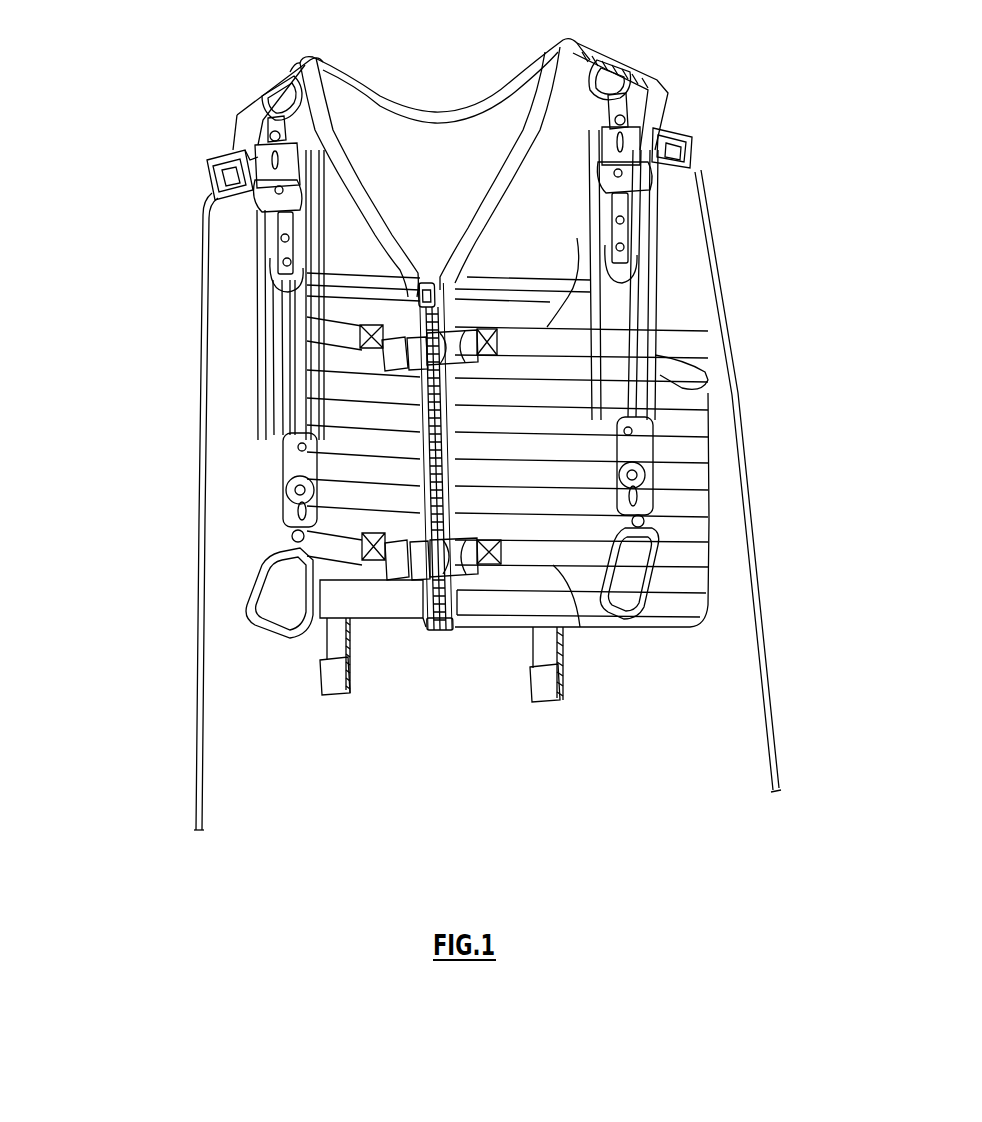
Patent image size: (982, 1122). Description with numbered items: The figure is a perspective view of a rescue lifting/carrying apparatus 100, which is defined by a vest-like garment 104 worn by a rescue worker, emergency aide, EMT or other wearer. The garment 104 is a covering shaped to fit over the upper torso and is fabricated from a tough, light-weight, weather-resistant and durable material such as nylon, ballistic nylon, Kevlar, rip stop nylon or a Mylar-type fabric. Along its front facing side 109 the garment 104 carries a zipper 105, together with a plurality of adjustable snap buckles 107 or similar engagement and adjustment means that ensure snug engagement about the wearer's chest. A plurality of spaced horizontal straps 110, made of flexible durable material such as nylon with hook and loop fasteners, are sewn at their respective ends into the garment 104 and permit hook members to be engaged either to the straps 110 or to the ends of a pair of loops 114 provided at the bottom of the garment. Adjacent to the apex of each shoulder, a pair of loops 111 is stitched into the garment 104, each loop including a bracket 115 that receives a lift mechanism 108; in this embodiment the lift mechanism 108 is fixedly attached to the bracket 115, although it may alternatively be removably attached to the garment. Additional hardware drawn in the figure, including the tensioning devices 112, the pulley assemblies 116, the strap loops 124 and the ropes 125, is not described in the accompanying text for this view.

The rescue lifting/carrying apparatus 100 is at (198, 72).
The vest-like garment 104 is at (563, 100).
The zipper 105 is at (447, 628).
The adjustable snap buckles 107 is at (470, 300).
The lift mechanism 108 is at (240, 142).
The front facing side 109 is at (380, 605).
The horizontal straps 110 is at (577, 238).
The loops 111 is at (270, 90).
The rope tensioner 112 is at (265, 228).
The loops 114 is at (320, 677).
The bracket 115 is at (290, 72).
The pulley with carabiner 116 is at (280, 473).
The strap loop 124 is at (253, 327).
The rope 125 is at (202, 553).